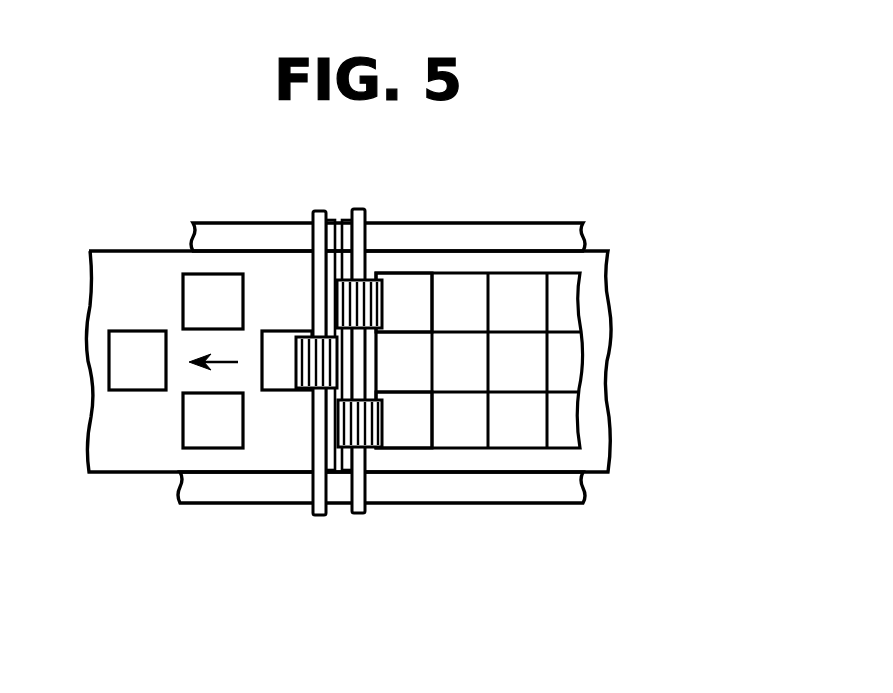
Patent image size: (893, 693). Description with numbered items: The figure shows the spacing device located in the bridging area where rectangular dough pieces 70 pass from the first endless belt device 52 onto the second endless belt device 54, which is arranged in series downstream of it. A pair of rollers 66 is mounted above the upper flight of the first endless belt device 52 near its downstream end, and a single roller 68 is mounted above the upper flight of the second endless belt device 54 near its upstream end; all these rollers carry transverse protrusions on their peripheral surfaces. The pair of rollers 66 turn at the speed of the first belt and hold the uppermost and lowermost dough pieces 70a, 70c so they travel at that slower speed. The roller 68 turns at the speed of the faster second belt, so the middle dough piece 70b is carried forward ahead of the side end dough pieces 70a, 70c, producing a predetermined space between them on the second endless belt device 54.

The first endless belt device 52 is at (505, 263).
The second endless belt device 54 is at (237, 263).
The pair of rollers 66 is at (382, 302).
The roller 68 is at (296, 372).
The rectangular dough pieces 70 is at (213, 432).
The uppermost dough piece 70a is at (412, 300).
The middle dough piece 70b is at (415, 362).
The lowermost dough piece 70c is at (417, 422).